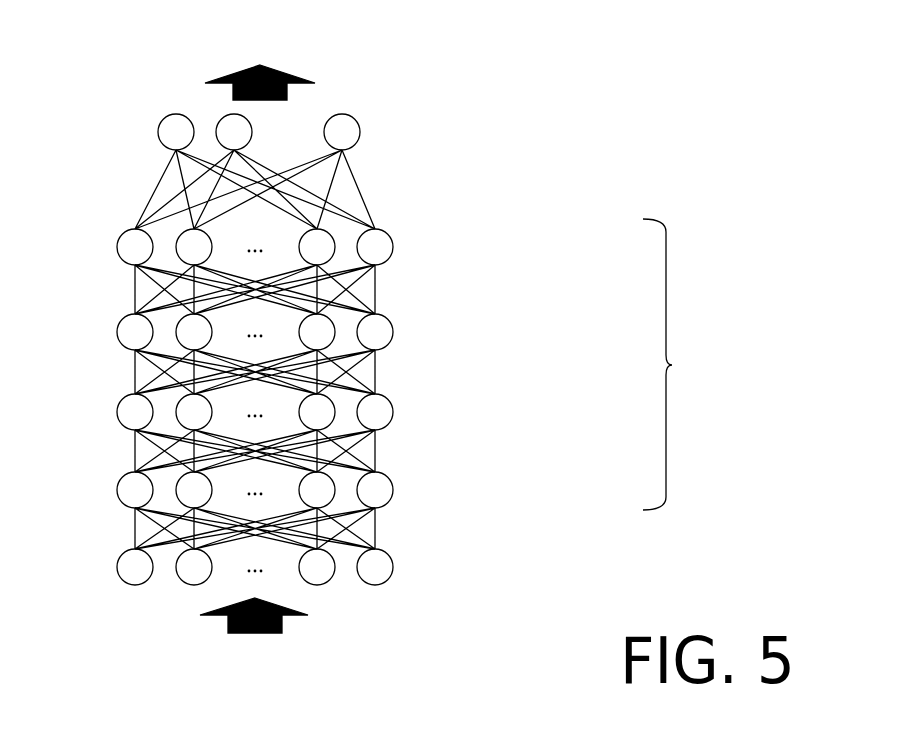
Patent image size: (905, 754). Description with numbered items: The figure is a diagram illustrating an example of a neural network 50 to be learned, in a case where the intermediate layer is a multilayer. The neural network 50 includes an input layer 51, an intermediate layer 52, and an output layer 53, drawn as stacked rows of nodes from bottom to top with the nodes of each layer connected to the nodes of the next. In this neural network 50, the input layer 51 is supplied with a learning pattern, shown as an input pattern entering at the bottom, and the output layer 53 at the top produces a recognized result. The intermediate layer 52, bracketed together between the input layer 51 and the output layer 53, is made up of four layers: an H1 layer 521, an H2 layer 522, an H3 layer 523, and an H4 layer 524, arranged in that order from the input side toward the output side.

The neural network 50 is at (72, 83).
The input layer 51 is at (445, 567).
The intermediate layer 52 is at (672, 365).
The H1 layer 521 is at (370, 489).
The H2 layer 522 is at (370, 412).
The H3 layer 523 is at (370, 330).
The H4 layer 524 is at (370, 246).
The output layer 53 is at (490, 127).